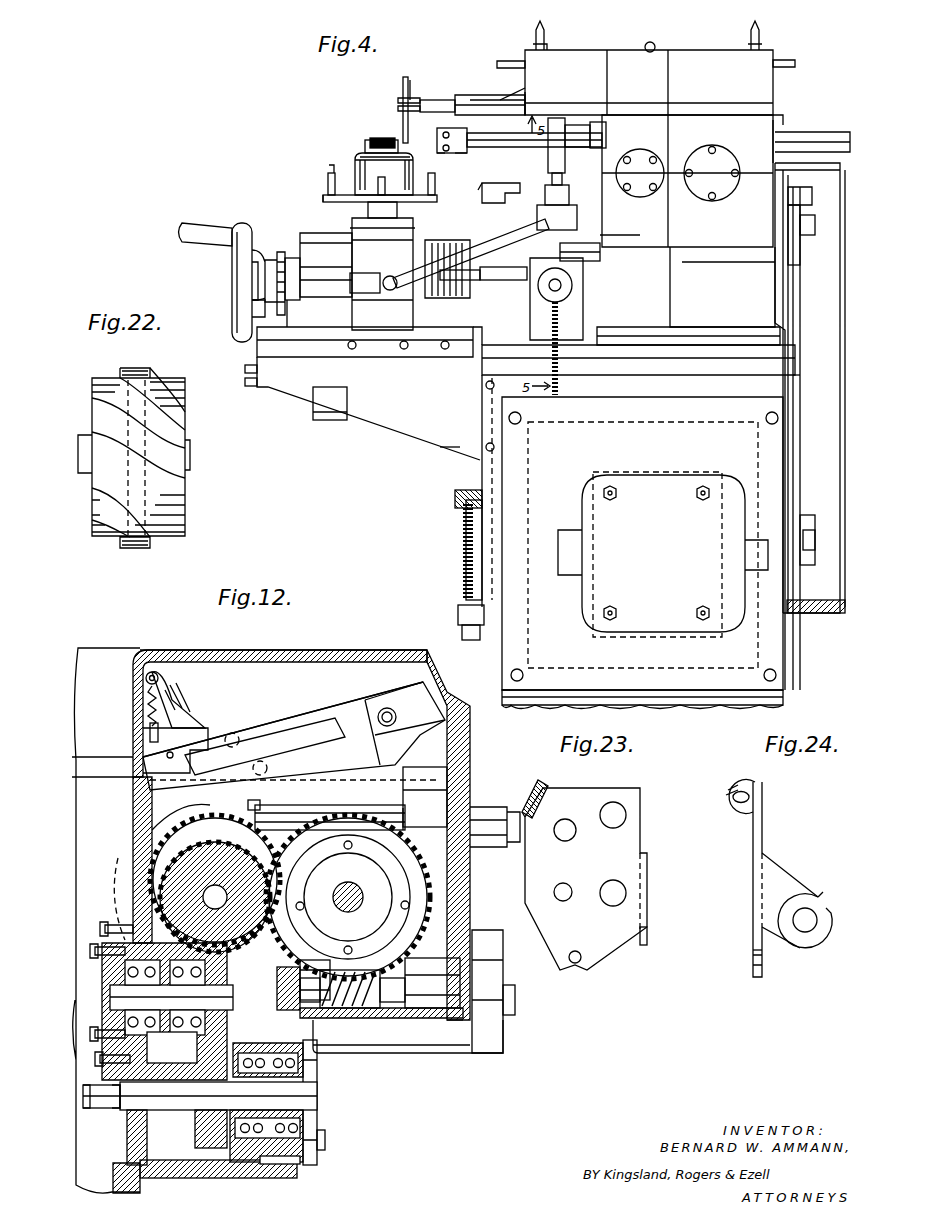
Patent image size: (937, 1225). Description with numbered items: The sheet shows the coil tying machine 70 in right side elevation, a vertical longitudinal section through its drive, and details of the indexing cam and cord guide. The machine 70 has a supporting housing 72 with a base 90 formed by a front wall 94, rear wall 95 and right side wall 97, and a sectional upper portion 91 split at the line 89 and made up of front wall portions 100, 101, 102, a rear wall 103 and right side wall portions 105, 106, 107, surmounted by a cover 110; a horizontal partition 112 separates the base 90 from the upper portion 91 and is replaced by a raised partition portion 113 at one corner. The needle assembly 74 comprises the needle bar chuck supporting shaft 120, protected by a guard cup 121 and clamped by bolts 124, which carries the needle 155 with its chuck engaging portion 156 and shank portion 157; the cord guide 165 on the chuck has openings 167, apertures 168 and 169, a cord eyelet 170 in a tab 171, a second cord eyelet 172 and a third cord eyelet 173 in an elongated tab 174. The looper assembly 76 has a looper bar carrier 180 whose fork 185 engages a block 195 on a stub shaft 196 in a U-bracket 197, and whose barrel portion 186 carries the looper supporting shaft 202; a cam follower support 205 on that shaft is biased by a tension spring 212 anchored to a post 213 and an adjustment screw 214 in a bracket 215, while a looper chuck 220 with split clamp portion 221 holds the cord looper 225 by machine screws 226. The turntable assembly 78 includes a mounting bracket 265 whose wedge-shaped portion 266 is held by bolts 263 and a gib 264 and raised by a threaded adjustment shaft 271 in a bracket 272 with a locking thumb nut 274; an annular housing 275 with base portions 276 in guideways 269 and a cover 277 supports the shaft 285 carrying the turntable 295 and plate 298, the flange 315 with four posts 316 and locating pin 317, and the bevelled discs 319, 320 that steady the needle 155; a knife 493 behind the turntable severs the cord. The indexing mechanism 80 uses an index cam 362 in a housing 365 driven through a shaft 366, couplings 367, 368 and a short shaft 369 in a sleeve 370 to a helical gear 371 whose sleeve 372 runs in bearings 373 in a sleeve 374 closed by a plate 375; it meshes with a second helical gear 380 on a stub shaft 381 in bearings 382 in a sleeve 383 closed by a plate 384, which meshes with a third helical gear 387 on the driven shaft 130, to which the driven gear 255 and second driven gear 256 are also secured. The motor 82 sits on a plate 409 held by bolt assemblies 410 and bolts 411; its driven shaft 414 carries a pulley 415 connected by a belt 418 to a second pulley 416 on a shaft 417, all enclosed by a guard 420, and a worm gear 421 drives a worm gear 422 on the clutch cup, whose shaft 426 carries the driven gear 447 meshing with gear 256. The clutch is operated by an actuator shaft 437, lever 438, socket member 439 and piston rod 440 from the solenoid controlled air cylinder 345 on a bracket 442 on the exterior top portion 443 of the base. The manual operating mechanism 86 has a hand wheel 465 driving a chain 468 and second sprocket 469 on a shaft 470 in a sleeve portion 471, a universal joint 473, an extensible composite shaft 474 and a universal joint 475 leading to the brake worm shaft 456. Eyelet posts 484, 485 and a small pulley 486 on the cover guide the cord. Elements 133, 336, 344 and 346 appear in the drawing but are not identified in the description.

In FIG. 4, the coil tying machine 70 is at (321, 100).
In FIG. 12, the coil tying machine 70 is at (404, 1098).
In FIG. 4, the supporting housing 72 is at (786, 690).
In FIG. 4, the needle assembly 74 is at (491, 153).
In FIG. 4, the looper assembly 76 is at (492, 84).
In FIG. 12, the looper assembly 76 is at (359, 688).
In FIG. 4, the turntable assembly 78 is at (314, 188).
In FIG. 4, the indexing mechanism 80 is at (260, 238).
In FIG. 4, the motor 82 is at (585, 605).
In FIG. 4, the manual operating mechanism 86 is at (222, 277).
In FIG. 4, the line 89 is at (755, 180).
In FIG. 12, the line 89 is at (108, 905).
In FIG. 4, the base 90 is at (540, 710).
In FIG. 4, the sectional upper portion 91 is at (789, 117).
In FIG. 12, the sectional upper portion 91 is at (122, 776).
In FIG. 4, the front wall 94 is at (500, 695).
In FIG. 4, the rear wall 95 is at (786, 699).
In FIG. 4, the right side wall 97 is at (650, 705).
In FIG. 4, the front wall portion 100 is at (525, 153).
In FIG. 4, the front wall portion 101 is at (605, 190).
In FIG. 12, the front wall portion 101 is at (133, 812).
In FIG. 4, the front wall portion 102 is at (640, 235).
In FIG. 4, the rear wall 103 is at (783, 300).
In FIG. 12, the rear wall 103 is at (472, 910).
In FIG. 4, the right side wall portion 105 is at (760, 140).
In FIG. 4, the right side wall portion 106 is at (690, 280).
In FIG. 4, the right side wall portion 107 is at (583, 290).
In FIG. 4, the cover 110 is at (712, 50).
In FIG. 12, the cover 110 is at (392, 660).
In FIG. 12, the horizontal partition 112 is at (215, 1178).
In FIG. 12, the partition portion 113 is at (447, 1040).
In FIG. 4, the needle bar chuck supporting shaft 120 is at (468, 93).
In FIG. 12, the needle bar chuck supporting shaft 120 is at (398, 820).
In FIG. 4, the guard cup 121 is at (828, 130).
In FIG. 12, the guard cup 121 is at (490, 808).
In FIG. 12, the bolts 124 is at (258, 800).
In FIG. 12, the driven shaft 130 is at (160, 905).
In FIG. 4, the bearing cap 133 is at (650, 160).
In FIG. 4, the needle 155 is at (440, 140).
In FIG. 4, the chuck engaging portion 156 is at (462, 153).
In FIG. 4, the shank portion 157 is at (440, 155).
In FIG. 23, the cord guide 165 is at (620, 965).
In FIG. 24, the cord guide 165 is at (773, 988).
In FIG. 23, the openings 167 is at (614, 802).
In FIG. 23, the aperture 168 is at (566, 818).
In FIG. 23, the aperture 169 is at (553, 890).
In FIG. 23, the cord eyelet 170 is at (535, 780).
In FIG. 24, the cord eyelet 170 is at (752, 790).
In FIG. 23, the tab 171 is at (540, 782).
In FIG. 24, the tab 171 is at (736, 812).
In FIG. 23, the second cord eyelet 172 is at (578, 968).
In FIG. 24, the second cord eyelet 172 is at (750, 957).
In FIG. 24, the third cord eyelet 173 is at (800, 943).
In FIG. 23, the elongated tab 174 is at (648, 937).
In FIG. 24, the elongated tab 174 is at (795, 890).
In FIG. 12, the looper bar carrier 180 is at (294, 704).
In FIG. 12, the fork 185 is at (335, 715).
In FIG. 4, the barrel portion 186 is at (520, 90).
In FIG. 12, the block 195 is at (368, 735).
In FIG. 12, the stub shaft 196 is at (398, 722).
In FIG. 12, the U-bracket 197 is at (405, 700).
In FIG. 4, the looper supporting shaft 202 is at (466, 95).
In FIG. 12, the cam follower support 205 is at (190, 740).
In FIG. 12, the tension spring 212 is at (148, 686).
In FIG. 12, the post 213 is at (150, 735).
In FIG. 12, the adjustment screw 214 is at (152, 670).
In FIG. 12, the bracket 215 is at (175, 700).
In FIG. 4, the looper chuck 220 is at (425, 100).
In FIG. 4, the split clamp portion 221 is at (415, 98).
In FIG. 4, the cord looper 225 is at (410, 98).
In FIG. 4, the machine screws 226 is at (398, 109).
In FIG. 12, the driven gear 255 is at (185, 825).
In FIG. 12, the second driven gear 256 is at (245, 835).
In FIG. 4, the bolts 263 is at (485, 386).
In FIG. 4, the gib 264 is at (532, 436).
In FIG. 4, the mounting bracket 265 is at (420, 432).
In FIG. 4, the wedge-shaped portion 266 is at (470, 470).
In FIG. 4, the horizontal guideway 269 is at (466, 347).
In FIG. 4, the threaded adjustment shaft 271 is at (466, 556).
In FIG. 4, the bracket 272 is at (458, 612).
In FIG. 4, the locking thumb nut 274 is at (455, 500).
In FIG. 4, the annular housing 275 is at (258, 329).
In FIG. 4, the elongated base portions 276 is at (375, 345).
In FIG. 4, the cover 277 is at (292, 258).
In FIG. 4, the shaft 285 is at (368, 210).
In FIG. 4, the turntable 295 is at (358, 165).
In FIG. 4, the plate 298 is at (355, 172).
In FIG. 4, the annular horizontal flange 315 is at (323, 199).
In FIG. 4, the posts 316 is at (328, 182).
In FIG. 4, the locating pin 317 is at (330, 168).
In FIG. 4, the bevelled disc 319 is at (390, 140).
In FIG. 4, the bevelled disc 320 is at (368, 145).
In FIG. 4, the block 336 is at (360, 430).
In FIG. 4, the beam 344 is at (560, 370).
In FIG. 4, the solenoid controlled air cylinder 345 is at (590, 262).
In FIG. 4, the screw 346 is at (570, 300).
In FIG. 22, the index cam 362 is at (209, 470).
In FIG. 4, the housing 365 is at (410, 340).
In FIG. 4, the shaft 366 is at (495, 282).
In FIG. 4, the coupling 367 is at (460, 290).
In FIG. 12, the coupling 368 is at (100, 1108).
In FIG. 12, the short shaft 369 is at (140, 1125).
In FIG. 12, the sleeve 370 is at (158, 1130).
In FIG. 12, the helical gear 371 is at (198, 1135).
In FIG. 12, the integral sleeve 372 is at (317, 1080).
In FIG. 12, the bearings 373 is at (250, 1052).
In FIG. 12, the sleeve 374 is at (268, 1165).
In FIG. 12, the plate 375 is at (325, 1140).
In FIG. 12, the second helical gear 380 is at (228, 1010).
In FIG. 12, the stub shaft 381 is at (117, 995).
In FIG. 12, the bearings 382 is at (160, 1040).
In FIG. 12, the sleeve 383 is at (100, 1054).
In FIG. 12, the plate 384 is at (100, 950).
In FIG. 12, the third helical gear 387 is at (290, 830).
In FIG. 4, the plate 409 is at (810, 426).
In FIG. 4, the bolt assemblies 410 is at (608, 482).
In FIG. 4, the bolts 411 is at (512, 418).
In FIG. 4, the driven shaft 414 is at (808, 565).
In FIG. 12, the driven shaft 414 is at (300, 985).
In FIG. 4, the pulley 415 is at (806, 515).
In FIG. 4, the second pulley 416 is at (802, 265).
In FIG. 4, the shaft 417 is at (812, 237).
In FIG. 12, the shaft 417 is at (282, 995).
In FIG. 4, the belt 418 is at (796, 385).
In FIG. 4, the guard 420 is at (812, 614).
In FIG. 12, the worm gear 421 is at (340, 975).
In FIG. 12, the worm gear 422 is at (412, 965).
In FIG. 12, the shaft 426 is at (348, 890).
In FIG. 4, the actuator shaft 437 is at (606, 133).
In FIG. 4, the lever 438 is at (575, 140).
In FIG. 4, the socket member 439 is at (555, 140).
In FIG. 4, the piston rod 440 is at (563, 170).
In FIG. 4, the bracket 442 is at (600, 335).
In FIG. 4, the exterior top portion 443 is at (650, 352).
In FIG. 12, the driven gear 447 is at (408, 840).
In FIG. 4, the shaft 456 is at (600, 223).
In FIG. 4, the hand wheel 465 is at (235, 224).
In FIG. 4, the chain 468 is at (277, 287).
In FIG. 4, the second sprocket 469 is at (290, 305).
In FIG. 4, the shaft 470 is at (375, 290).
In FIG. 4, the sleeve portion 471 is at (320, 240).
In FIG. 4, the universal joint 473 is at (388, 276).
In FIG. 4, the composite shaft 474 is at (480, 245).
In FIG. 4, the universal joint 475 is at (600, 252).
In FIG. 4, the eyelet posts 484 is at (770, 58).
In FIG. 4, the eyelet posts 485 is at (530, 58).
In FIG. 4, the small pulley 486 is at (651, 42).
In FIG. 4, the knife 493 is at (485, 198).